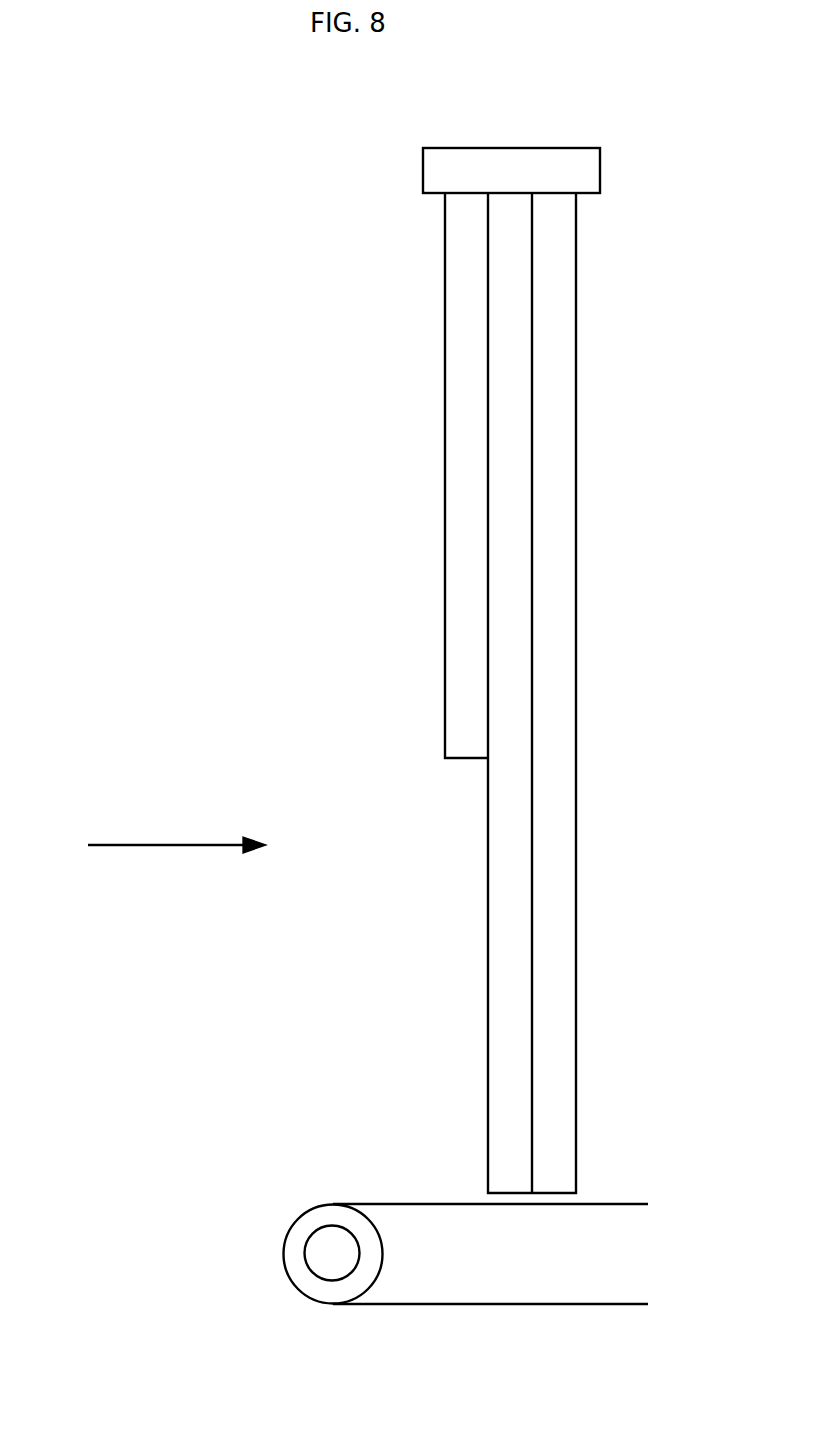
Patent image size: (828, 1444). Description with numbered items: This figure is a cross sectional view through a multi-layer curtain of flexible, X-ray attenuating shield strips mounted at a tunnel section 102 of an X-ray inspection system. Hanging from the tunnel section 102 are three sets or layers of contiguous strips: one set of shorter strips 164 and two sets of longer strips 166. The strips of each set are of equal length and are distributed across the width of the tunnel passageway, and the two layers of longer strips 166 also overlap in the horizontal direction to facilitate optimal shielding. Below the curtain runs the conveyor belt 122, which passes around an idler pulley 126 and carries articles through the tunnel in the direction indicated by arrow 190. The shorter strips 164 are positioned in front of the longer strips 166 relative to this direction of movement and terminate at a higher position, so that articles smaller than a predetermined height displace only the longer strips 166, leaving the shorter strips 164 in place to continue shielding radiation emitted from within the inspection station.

The tunnel section 102 is at (510, 170).
The shorter strips 164 is at (467, 388).
The longer strips 166 is at (552, 912).
The direction of movement arrow 190 is at (144, 844).
The conveyor belt 122 is at (410, 1205).
The idler pulley 126 is at (332, 1259).